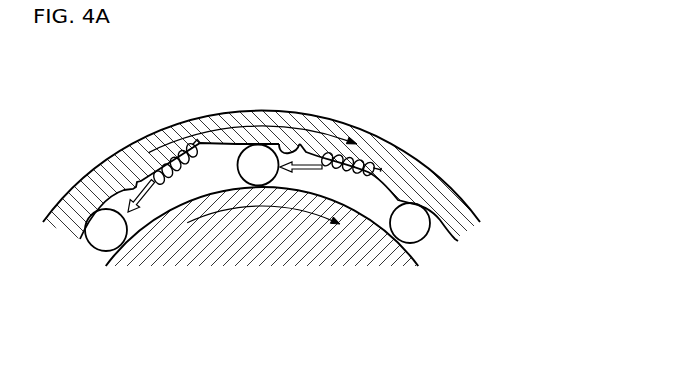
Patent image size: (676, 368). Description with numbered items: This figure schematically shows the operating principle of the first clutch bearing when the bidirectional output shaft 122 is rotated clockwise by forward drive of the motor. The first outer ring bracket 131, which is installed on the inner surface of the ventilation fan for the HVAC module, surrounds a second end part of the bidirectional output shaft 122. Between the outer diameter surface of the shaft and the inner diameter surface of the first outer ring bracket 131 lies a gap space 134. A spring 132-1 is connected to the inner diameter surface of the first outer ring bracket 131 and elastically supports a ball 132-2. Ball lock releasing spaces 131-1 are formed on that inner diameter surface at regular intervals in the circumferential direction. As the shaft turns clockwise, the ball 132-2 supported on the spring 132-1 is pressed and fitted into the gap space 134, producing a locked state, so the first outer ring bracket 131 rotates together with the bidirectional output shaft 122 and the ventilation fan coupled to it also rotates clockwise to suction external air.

The first outer ring bracket 131 is at (133, 165).
The ball lock releasing space 131-1 is at (298, 150).
The spring 132-1 is at (345, 176).
The ball 132-2 is at (257, 163).
The gap space 134 is at (187, 191).
The bidirectional output shaft 122 is at (305, 241).